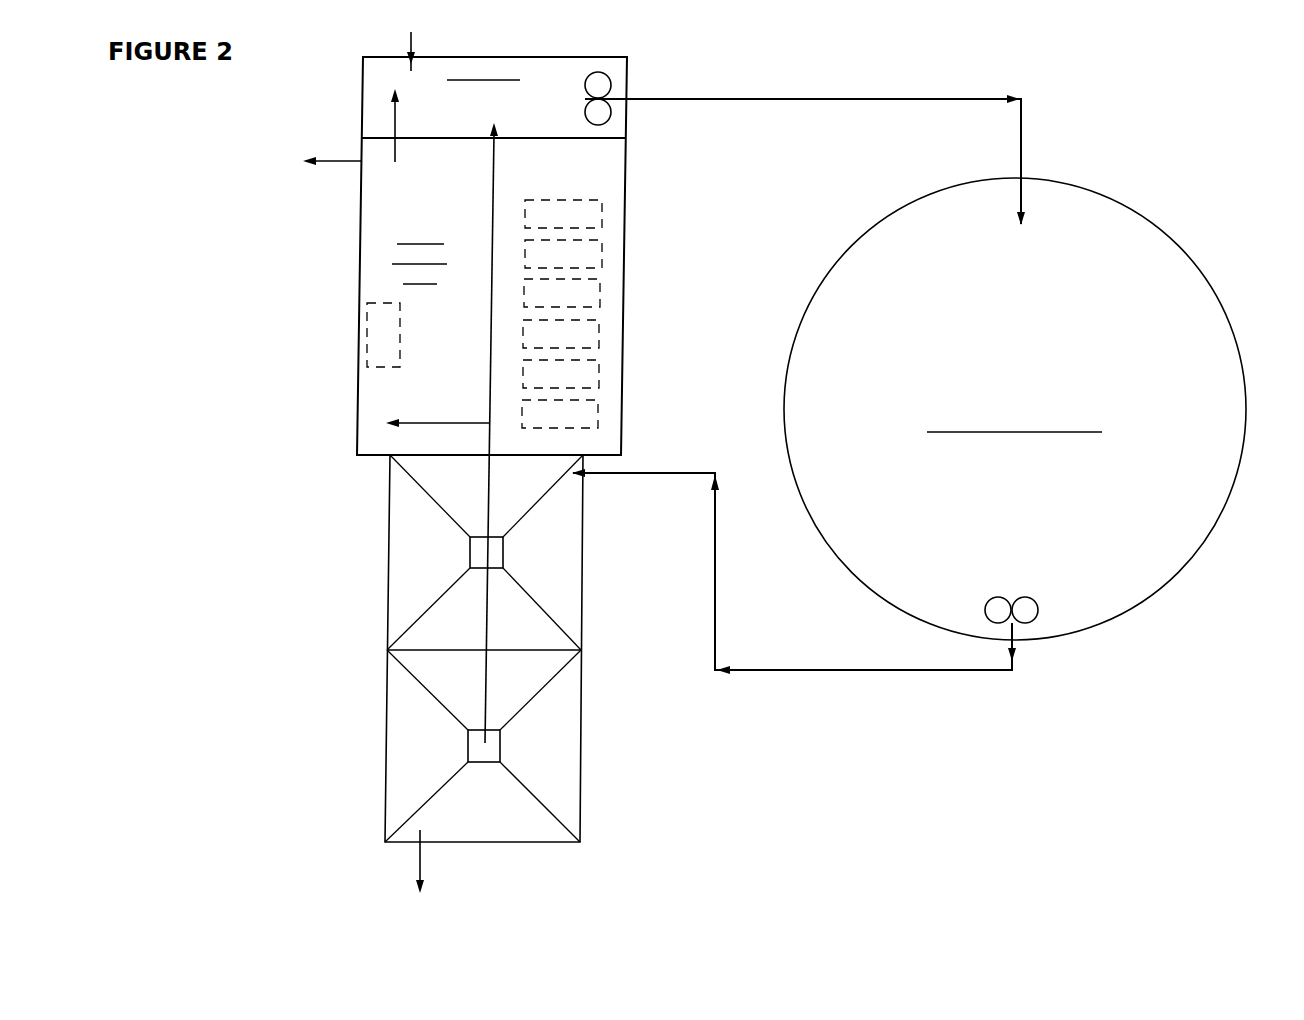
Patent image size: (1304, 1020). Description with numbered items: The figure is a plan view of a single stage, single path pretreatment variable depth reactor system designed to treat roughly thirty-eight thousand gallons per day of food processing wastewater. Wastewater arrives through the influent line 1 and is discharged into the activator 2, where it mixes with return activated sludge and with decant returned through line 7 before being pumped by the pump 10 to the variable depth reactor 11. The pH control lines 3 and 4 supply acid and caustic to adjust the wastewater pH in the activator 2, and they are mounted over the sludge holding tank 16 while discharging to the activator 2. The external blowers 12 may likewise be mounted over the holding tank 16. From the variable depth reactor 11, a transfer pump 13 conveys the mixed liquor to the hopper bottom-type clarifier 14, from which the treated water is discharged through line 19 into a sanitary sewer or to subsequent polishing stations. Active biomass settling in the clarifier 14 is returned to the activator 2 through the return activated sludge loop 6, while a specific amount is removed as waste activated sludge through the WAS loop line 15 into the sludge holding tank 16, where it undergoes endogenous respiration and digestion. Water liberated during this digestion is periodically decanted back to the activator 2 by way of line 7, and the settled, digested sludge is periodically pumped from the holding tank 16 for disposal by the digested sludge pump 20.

The influent line 1 is at (424, 42).
The activator 2 is at (495, 97).
The acid feed line 3 is at (563, 201).
The caustic feed line 4 is at (563, 221).
The return activated sludge (RAS) loop 6 is at (498, 433).
The decant line 7 is at (396, 134).
The pump 10 is at (793, 148).
The variable depth reactor 11 is at (1015, 409).
The external blower 12 is at (548, 353).
The transfer pump 13 is at (805, 571).
The hopper bottom-type clarifier 14 is at (484, 648).
The WAS loop line 15 is at (437, 412).
The sludge holding tank 16 is at (425, 296).
The discharge line 19 is at (459, 864).
The digested sludge pump 20 is at (307, 151).